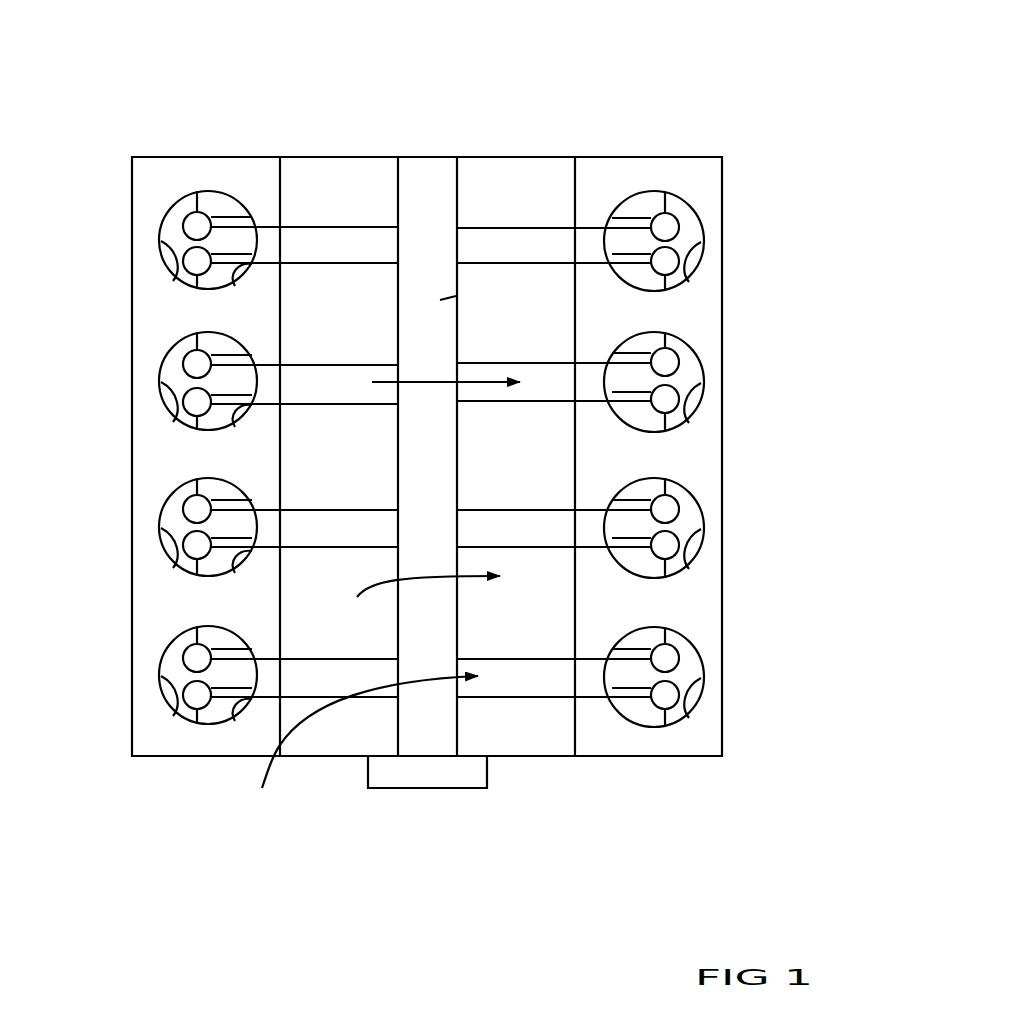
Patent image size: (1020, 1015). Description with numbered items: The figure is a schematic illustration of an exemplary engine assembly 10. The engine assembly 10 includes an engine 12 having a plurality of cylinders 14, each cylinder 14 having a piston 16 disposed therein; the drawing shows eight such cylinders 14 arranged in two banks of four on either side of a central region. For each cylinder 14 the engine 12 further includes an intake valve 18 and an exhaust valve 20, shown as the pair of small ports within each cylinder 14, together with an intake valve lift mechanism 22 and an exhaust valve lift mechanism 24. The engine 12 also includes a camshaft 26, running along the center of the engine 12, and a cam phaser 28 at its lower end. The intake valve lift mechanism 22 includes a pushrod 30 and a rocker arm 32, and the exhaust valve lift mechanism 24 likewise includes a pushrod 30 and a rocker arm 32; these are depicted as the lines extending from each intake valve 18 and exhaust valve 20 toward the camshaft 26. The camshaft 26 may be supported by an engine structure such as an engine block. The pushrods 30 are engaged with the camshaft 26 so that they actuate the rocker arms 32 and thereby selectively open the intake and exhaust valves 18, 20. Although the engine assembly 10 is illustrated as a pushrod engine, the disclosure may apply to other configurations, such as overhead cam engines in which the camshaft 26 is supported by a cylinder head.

The engine assembly 10 is at (818, 90).
The engine 12 is at (340, 157).
The cylinder 14 is at (178, 291).
The piston 16 is at (178, 212).
The intake valve 18 is at (198, 212).
The exhaust valve 20 is at (197, 285).
The intake valve lift mechanism 22 is at (259, 206).
The exhaust valve lift mechanism 24 is at (314, 247).
The camshaft 26 is at (457, 328).
The cam phaser 28 is at (488, 768).
The pushrod 30 is at (316, 226).
The rocker arm 32 is at (234, 216).